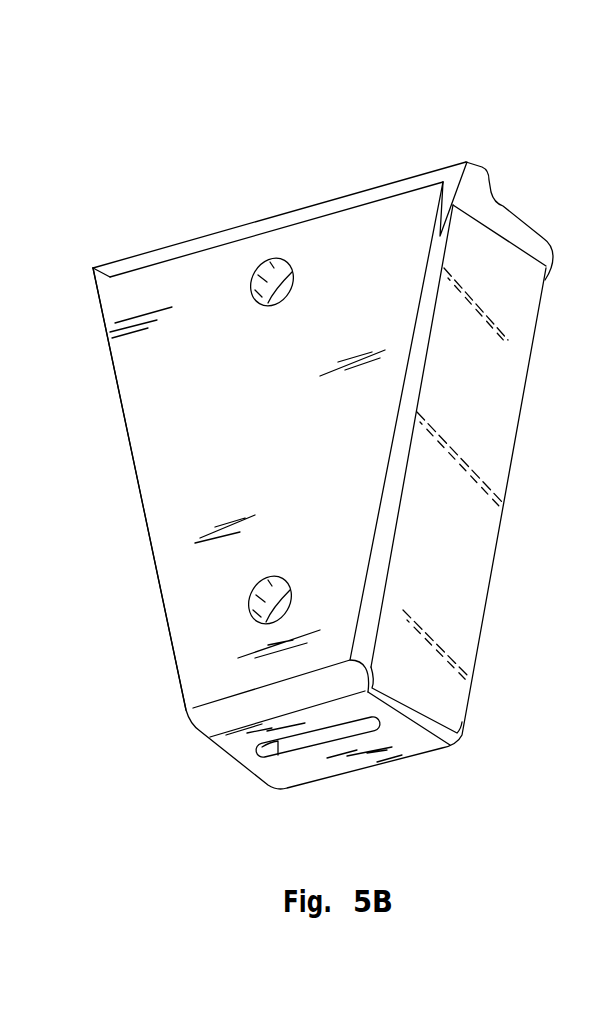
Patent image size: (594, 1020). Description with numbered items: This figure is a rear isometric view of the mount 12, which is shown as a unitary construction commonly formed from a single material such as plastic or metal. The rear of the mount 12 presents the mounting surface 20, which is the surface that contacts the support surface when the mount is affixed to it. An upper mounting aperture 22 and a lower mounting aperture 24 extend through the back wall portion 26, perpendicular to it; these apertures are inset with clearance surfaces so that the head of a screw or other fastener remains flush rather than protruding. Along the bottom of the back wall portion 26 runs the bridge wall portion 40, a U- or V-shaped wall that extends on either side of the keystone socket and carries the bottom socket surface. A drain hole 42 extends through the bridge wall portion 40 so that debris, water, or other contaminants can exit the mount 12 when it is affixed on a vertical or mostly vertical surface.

The mount 12 is at (313, 457).
The mounting surface 20 is at (258, 449).
The upper mounting aperture 22 is at (252, 285).
The lower mounting aperture 24 is at (250, 602).
The back wall portion 26 is at (167, 415).
The bridge wall portion 40 is at (385, 519).
The drain hole 42 is at (310, 741).